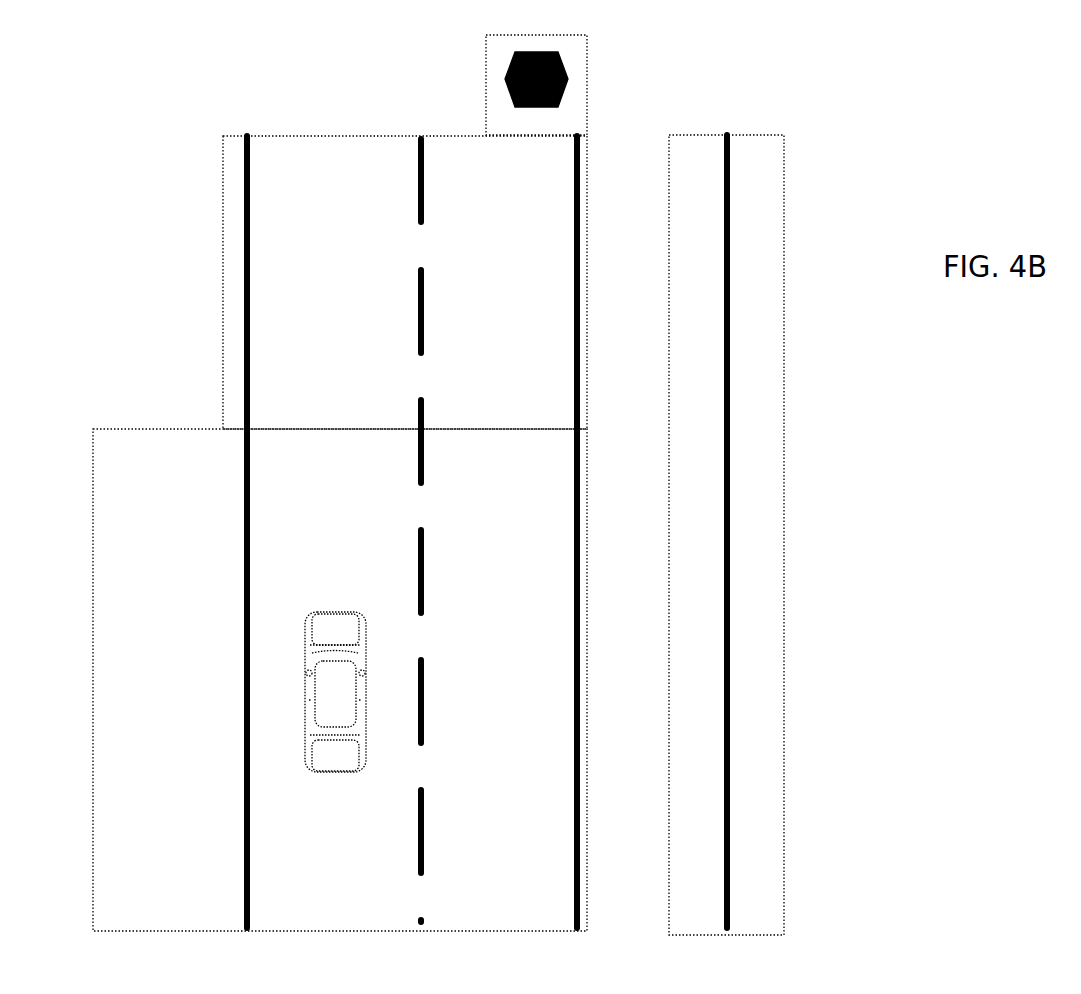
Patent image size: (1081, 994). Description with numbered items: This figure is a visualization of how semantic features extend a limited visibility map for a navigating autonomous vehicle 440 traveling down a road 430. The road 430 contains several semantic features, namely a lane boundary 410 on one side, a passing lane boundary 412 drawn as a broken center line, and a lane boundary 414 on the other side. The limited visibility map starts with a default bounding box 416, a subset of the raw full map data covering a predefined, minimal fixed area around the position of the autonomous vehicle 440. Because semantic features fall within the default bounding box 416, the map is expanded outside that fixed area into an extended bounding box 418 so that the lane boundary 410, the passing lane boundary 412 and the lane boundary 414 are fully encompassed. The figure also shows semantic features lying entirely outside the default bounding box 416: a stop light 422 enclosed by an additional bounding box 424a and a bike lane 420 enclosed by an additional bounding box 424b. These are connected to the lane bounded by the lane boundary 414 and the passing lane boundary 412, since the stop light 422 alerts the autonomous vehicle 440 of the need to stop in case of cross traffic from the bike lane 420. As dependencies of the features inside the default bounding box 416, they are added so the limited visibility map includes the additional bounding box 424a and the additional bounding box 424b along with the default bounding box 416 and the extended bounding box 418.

The lane boundary 410 is at (238, 163).
The passing lane boundary 412 is at (405, 330).
The lane boundary 414 is at (566, 383).
The default bounding box 416 is at (147, 913).
The extended bounding box 418 is at (322, 420).
The bike lane 420 is at (734, 297).
The stop light 422 is at (584, 78).
The additional bounding box 424a is at (533, 130).
The additional bounding box 424b is at (778, 158).
The road 430 is at (397, 98).
The autonomous vehicle 440 is at (358, 692).